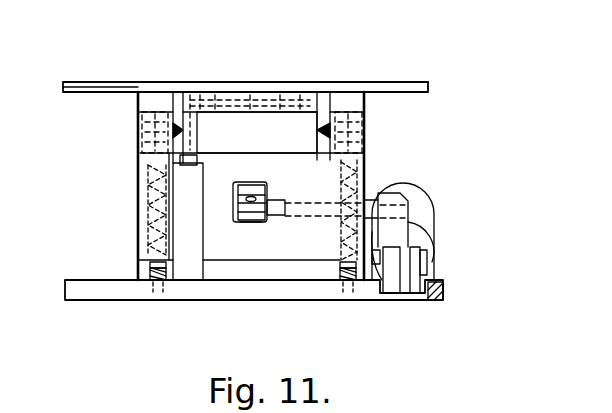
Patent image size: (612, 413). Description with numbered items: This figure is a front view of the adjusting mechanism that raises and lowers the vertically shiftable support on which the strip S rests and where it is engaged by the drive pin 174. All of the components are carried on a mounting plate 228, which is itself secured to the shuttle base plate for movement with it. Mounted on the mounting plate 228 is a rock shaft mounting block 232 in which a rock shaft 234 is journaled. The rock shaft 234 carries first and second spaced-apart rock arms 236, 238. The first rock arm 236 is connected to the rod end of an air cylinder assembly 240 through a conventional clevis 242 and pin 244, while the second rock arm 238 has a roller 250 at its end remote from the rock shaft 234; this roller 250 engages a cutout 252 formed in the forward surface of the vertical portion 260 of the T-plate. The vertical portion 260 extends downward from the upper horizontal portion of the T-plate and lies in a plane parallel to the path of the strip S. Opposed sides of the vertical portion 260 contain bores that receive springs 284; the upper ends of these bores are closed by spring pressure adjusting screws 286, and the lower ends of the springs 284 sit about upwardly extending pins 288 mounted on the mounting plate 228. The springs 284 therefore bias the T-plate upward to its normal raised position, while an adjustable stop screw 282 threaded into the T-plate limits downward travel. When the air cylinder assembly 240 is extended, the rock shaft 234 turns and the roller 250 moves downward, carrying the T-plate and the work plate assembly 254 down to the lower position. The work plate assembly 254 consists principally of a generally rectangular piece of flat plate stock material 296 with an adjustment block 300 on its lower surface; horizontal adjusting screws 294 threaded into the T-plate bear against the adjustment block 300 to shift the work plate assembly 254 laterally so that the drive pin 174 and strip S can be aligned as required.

The drive pin 174 is at (233, 86).
The strip S is at (393, 88).
The flat plate stock material 296 is at (158, 98).
The work plate assembly 254 is at (368, 104).
The horizontal adjusting screws 294 is at (177, 118).
The adjustment block 300 is at (268, 138).
The spring pressure adjusting screws 286 is at (138, 120).
The rock shaft mounting block 232 is at (332, 208).
The adjustable stop screw 282 is at (180, 160).
The roller 250 is at (250, 182).
The cutout 252 is at (236, 196).
The second rock arm 238 is at (255, 222).
The vertical portion 260 is at (298, 176).
The upwardly extending pins 288 is at (152, 266).
The springs 284 is at (150, 278).
The mounting plate 228 is at (88, 290).
The clevis 242 is at (428, 300).
The air cylinder assembly 240 is at (435, 246).
The first rock arm 236 is at (408, 218).
The pin 244 is at (430, 276).
The rock shaft 234 is at (370, 205).